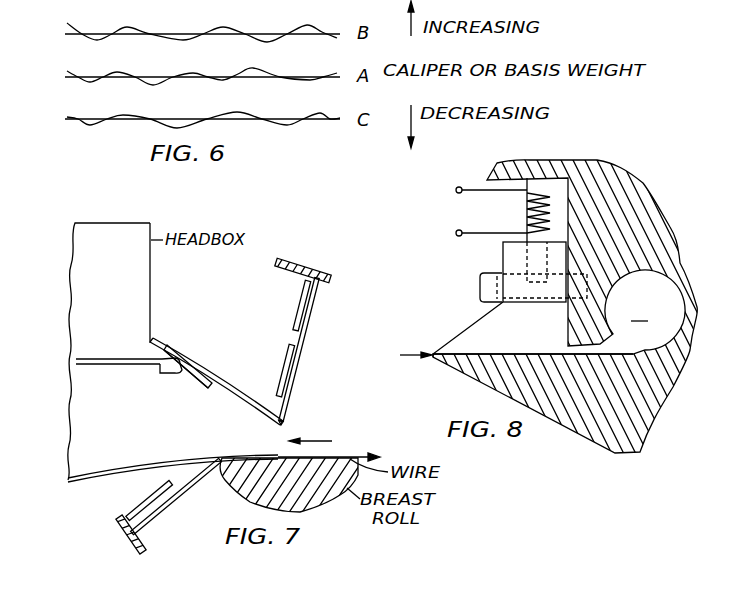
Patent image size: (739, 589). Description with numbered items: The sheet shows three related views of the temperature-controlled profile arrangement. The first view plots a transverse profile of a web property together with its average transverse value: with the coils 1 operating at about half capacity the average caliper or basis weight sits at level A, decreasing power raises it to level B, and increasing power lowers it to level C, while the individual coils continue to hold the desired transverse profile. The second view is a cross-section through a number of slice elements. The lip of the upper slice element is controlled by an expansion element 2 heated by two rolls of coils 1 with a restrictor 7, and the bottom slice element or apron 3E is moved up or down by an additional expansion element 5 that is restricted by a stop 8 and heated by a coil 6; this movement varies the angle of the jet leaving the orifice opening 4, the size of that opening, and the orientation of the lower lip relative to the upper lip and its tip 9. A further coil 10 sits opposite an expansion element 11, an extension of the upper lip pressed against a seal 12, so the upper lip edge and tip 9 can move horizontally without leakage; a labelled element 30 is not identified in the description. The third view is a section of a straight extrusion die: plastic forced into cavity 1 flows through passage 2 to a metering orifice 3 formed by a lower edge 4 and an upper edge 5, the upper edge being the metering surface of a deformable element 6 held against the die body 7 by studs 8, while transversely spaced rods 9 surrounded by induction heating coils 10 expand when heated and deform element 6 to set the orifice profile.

In FIG. 7, the coils / cavity 1 is at (294, 306).
In FIG. 8, the coils / cavity 1 is at (640, 311).
In FIG. 7, the expansion element / passage 2 is at (310, 342).
In FIG. 8, the expansion element / passage 2 is at (590, 358).
In FIG. 8, the metering orifice 3 is at (404, 356).
In FIG. 7, the bottom slice element or apron 3E is at (205, 452).
In FIG. 7, the orifice opening / lower surface or edge 4 is at (319, 442).
In FIG. 8, the orifice opening / lower surface or edge 4 is at (505, 358).
In FIG. 7, the additional expansion element / upper edge 5 is at (164, 504).
In FIG. 8, the additional expansion element / upper edge 5 is at (473, 332).
In FIG. 7, the coil / deformable element 6 is at (152, 494).
In FIG. 8, the coil / deformable element 6 is at (503, 259).
In FIG. 7, the restrictor / main body of die 7 is at (313, 258).
In FIG. 8, the restrictor / main body of die 7 is at (526, 221).
In FIG. 7, the stop / studs 8 is at (125, 531).
In FIG. 8, the stop / studs 8 is at (480, 287).
In FIG. 7, the tip of upper lip / rods 9 is at (286, 423).
In FIG. 8, the tip of upper lip / rods 9 is at (552, 236).
In FIG. 7, the coil / induction heating coils 10 is at (203, 329).
In FIG. 8, the coil / induction heating coils 10 is at (526, 200).
In FIG. 7, the expansion element 11 is at (158, 352).
In FIG. 7, the seal 12 is at (176, 376).
In FIG. 7, the apron strip 30 is at (257, 414).